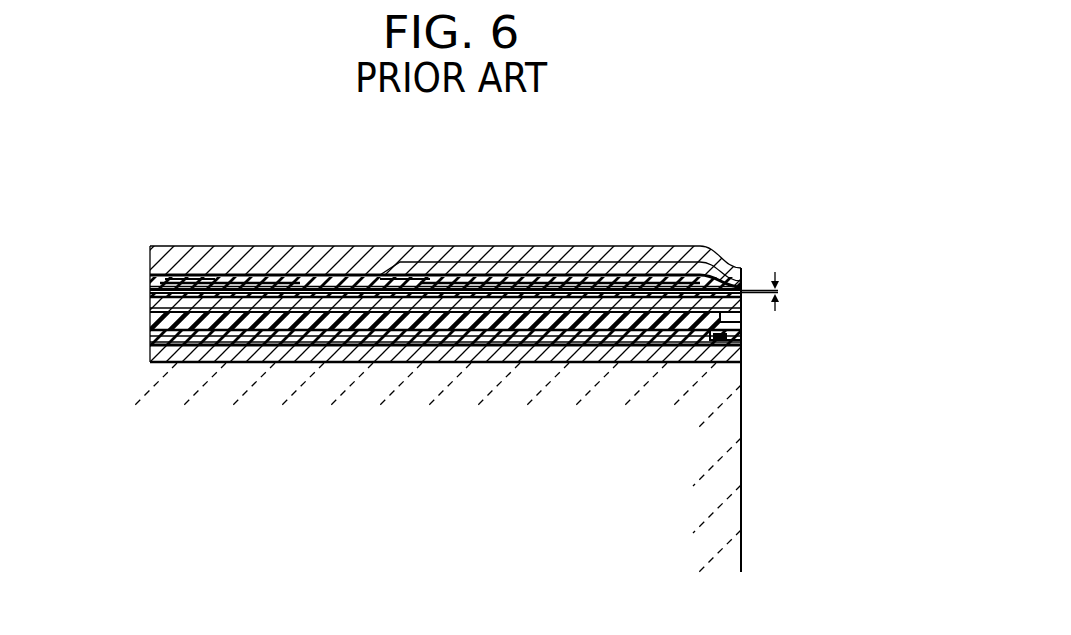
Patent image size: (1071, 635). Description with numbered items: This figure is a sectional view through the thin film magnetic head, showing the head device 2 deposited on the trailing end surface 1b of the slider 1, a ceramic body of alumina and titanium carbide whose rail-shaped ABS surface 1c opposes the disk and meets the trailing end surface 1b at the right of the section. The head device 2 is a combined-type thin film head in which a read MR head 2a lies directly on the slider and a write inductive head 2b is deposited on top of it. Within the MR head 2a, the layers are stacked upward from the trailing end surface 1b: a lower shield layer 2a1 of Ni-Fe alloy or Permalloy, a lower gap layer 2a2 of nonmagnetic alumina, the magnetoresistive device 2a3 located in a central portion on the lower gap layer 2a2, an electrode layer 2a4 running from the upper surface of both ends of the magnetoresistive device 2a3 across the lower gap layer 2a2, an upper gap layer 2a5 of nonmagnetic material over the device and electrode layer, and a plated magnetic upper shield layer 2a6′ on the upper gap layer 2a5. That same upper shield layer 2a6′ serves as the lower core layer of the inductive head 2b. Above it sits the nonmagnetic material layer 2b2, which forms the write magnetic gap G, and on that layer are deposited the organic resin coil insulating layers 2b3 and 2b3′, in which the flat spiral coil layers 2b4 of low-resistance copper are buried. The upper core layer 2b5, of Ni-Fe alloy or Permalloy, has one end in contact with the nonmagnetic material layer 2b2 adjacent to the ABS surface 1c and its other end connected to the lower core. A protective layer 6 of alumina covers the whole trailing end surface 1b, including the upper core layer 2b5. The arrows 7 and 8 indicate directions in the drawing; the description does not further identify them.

The slider 1 is at (713, 515).
The trailing end surface 1b is at (228, 350).
The ABS surface 1c is at (741, 457).
The head device 2 is at (657, 215).
The MR head 2a is at (148, 300).
The lower shield layer 2a1 is at (604, 344).
The lower gap layer 2a2 is at (741, 345).
The magnetoresistive device 2a3 is at (741, 335).
The electrode layer 2a4 is at (499, 328).
The upper gap layer 2a5 is at (741, 321).
The upper shield layer 2a6′ is at (588, 305).
The inductive head 2b is at (148, 246).
The nonmagnetic material layer 2b2 is at (318, 296).
The coil insulating layer 2b3 is at (155, 293).
The coil insulating layer 2b3′ is at (198, 280).
The flat spiral coil layer 2b4 is at (205, 278).
The upper core layer 2b5 is at (445, 255).
The protective layer 6 is at (289, 263).
The medium facing surface direction 7 is at (808, 323).
The track width direction 8 is at (483, 215).
The write magnetic gap G is at (772, 291).